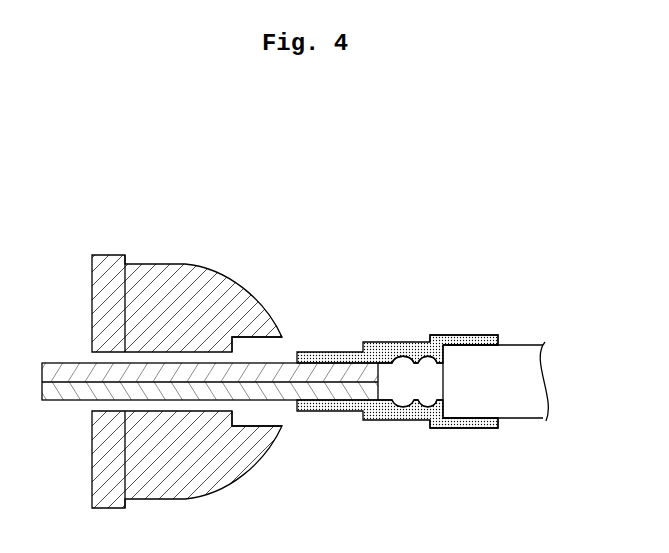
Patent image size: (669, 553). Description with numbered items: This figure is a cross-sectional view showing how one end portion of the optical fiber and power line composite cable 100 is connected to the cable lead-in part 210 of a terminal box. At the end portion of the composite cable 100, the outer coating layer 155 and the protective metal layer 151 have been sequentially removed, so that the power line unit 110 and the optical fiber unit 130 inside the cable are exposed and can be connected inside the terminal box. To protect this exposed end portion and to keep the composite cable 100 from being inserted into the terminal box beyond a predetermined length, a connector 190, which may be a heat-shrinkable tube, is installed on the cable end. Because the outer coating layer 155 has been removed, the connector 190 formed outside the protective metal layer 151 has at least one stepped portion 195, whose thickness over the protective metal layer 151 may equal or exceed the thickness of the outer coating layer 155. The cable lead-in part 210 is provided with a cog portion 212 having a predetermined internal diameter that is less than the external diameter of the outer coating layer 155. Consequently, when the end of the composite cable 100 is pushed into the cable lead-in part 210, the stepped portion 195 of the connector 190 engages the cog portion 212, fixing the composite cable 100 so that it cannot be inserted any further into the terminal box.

The optical fiber and power line composite cable 100 is at (425, 365).
The power line unit 110 is at (287, 401).
The optical fiber unit 130 is at (290, 363).
The protective metal layer 151 is at (422, 341).
The outer coating layer 155 is at (523, 418).
The connector 190 is at (403, 421).
The stepped portion 195 is at (365, 341).
The cable lead-in part 210 is at (182, 272).
The cog portion 212 is at (230, 338).